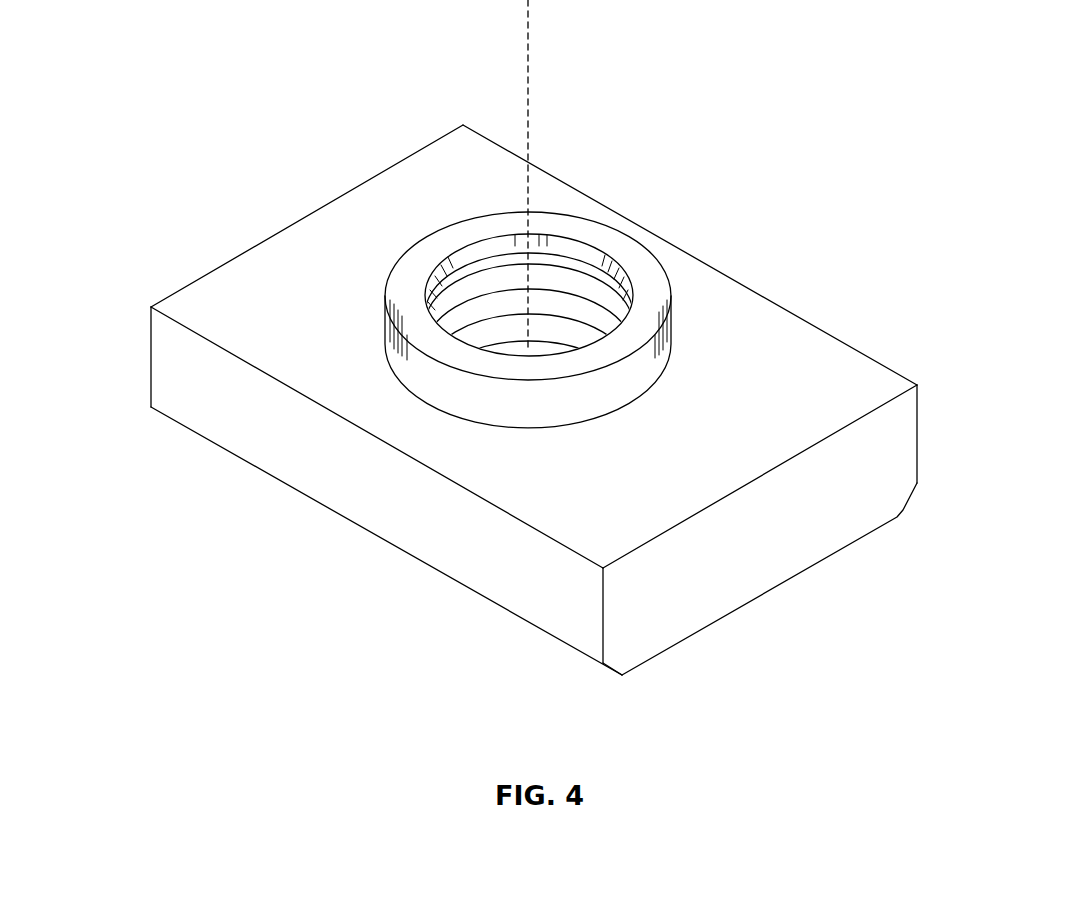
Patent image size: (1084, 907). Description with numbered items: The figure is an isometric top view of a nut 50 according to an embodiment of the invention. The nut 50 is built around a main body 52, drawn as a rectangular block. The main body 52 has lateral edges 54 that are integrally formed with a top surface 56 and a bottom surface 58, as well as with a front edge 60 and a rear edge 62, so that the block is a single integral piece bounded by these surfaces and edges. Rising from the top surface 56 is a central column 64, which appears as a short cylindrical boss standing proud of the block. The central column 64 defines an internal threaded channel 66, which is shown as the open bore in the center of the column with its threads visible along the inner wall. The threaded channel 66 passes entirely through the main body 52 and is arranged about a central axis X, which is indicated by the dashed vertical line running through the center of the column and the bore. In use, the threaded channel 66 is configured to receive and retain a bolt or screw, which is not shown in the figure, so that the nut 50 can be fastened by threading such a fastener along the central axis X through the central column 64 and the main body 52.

The nut 50 is at (328, 122).
The main body 52 is at (315, 252).
The lateral edges 54 is at (428, 535).
The top surface 56 is at (740, 340).
The bottom surface 58 is at (648, 662).
The front edge 60 is at (748, 544).
The rear edge 62 is at (150, 342).
The central column 64 is at (658, 263).
The threaded channel 66 is at (478, 295).
The central axis X is at (528, 63).